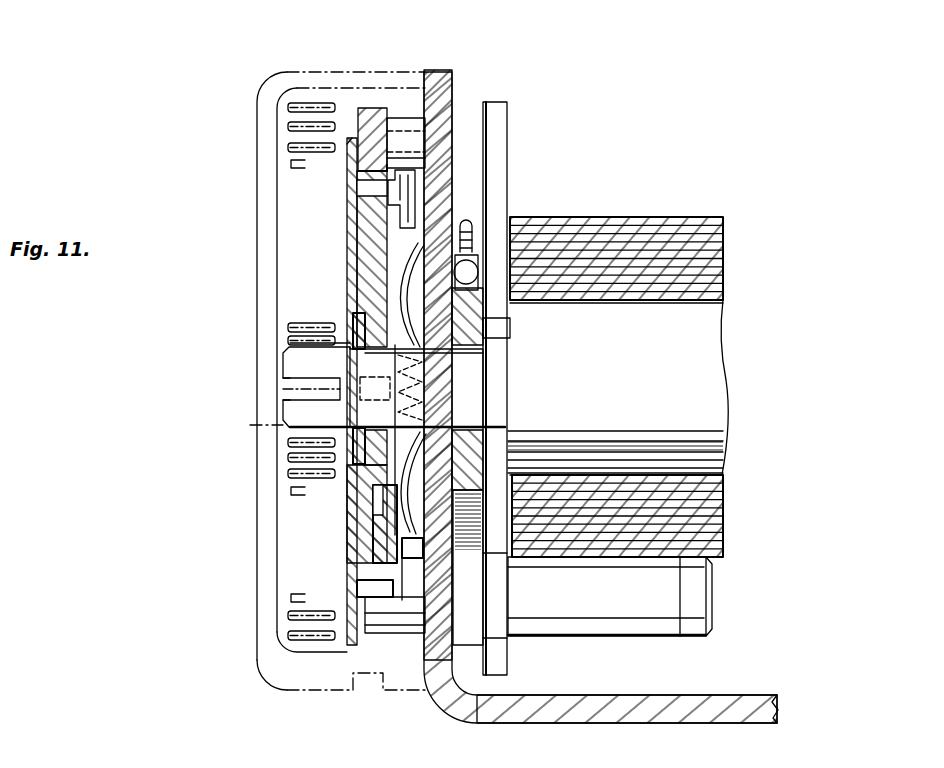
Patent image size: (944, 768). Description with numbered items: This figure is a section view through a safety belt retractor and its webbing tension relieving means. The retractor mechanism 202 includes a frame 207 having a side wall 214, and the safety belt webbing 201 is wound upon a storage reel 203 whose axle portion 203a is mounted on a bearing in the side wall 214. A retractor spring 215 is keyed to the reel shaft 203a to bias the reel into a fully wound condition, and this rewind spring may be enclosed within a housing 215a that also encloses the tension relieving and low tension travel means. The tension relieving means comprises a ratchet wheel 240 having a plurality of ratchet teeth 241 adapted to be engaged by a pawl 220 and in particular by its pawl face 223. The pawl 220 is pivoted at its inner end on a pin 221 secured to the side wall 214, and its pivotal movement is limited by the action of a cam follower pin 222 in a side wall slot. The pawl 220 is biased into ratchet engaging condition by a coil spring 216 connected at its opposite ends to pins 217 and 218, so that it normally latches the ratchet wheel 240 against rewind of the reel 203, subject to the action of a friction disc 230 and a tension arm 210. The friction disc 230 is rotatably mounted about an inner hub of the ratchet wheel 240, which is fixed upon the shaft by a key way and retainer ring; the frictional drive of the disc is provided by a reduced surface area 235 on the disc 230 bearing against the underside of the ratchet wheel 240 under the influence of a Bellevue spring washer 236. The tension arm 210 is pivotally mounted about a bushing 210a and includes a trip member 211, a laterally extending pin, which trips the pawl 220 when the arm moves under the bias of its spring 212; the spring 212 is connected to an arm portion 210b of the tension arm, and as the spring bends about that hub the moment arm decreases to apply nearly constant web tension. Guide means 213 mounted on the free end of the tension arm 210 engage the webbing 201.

The safety belt webbing 201 is at (678, 217).
The retractor mechanism 202 is at (322, 720).
The storage reel 203 is at (700, 348).
The axle portion 203a is at (310, 362).
The frame 207 is at (723, 698).
The tension arm 210 is at (468, 603).
The bushing 210a is at (508, 335).
The arm portion 210b is at (470, 478).
The trip member 211 is at (388, 613).
The biasing spring 212 is at (472, 252).
The guide means 213 is at (680, 589).
The side wall 214 is at (440, 78).
The retractor spring 215 is at (296, 118).
The housing 215a is at (276, 80).
The coil spring 216 is at (368, 285).
The pin 217 is at (452, 236).
The pin 218 is at (420, 562).
The pawl 220 is at (372, 108).
The pin 221 is at (407, 125).
The cam follower pin 222 is at (420, 187).
The pawl face 223 is at (364, 220).
The friction disc 230 is at (383, 502).
The reduced surface area 235 is at (372, 527).
The Bellevue spring washer 236 is at (400, 262).
The ratchet wheel 240 is at (363, 553).
The ratchet teeth 241 is at (370, 587).